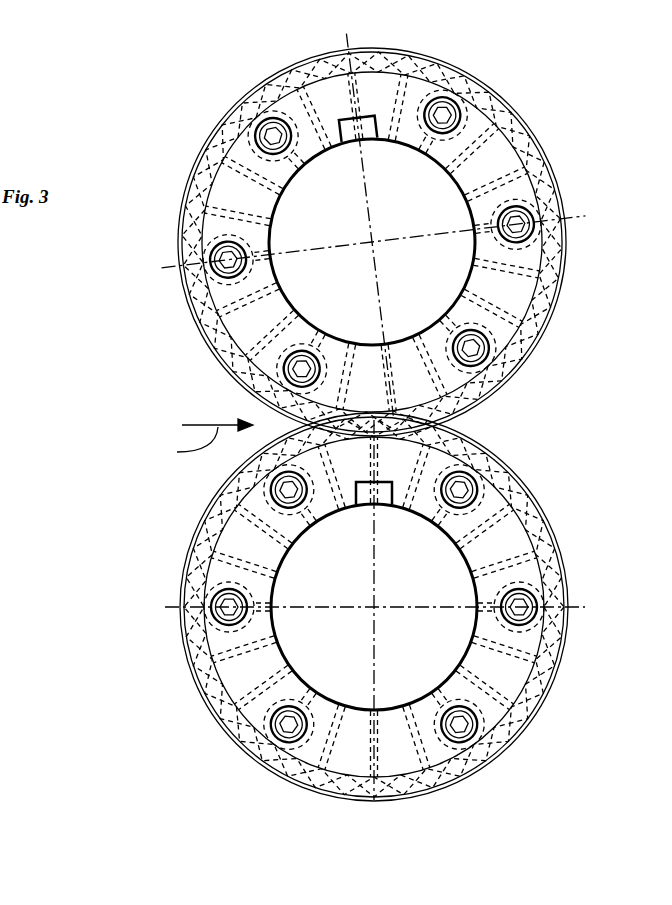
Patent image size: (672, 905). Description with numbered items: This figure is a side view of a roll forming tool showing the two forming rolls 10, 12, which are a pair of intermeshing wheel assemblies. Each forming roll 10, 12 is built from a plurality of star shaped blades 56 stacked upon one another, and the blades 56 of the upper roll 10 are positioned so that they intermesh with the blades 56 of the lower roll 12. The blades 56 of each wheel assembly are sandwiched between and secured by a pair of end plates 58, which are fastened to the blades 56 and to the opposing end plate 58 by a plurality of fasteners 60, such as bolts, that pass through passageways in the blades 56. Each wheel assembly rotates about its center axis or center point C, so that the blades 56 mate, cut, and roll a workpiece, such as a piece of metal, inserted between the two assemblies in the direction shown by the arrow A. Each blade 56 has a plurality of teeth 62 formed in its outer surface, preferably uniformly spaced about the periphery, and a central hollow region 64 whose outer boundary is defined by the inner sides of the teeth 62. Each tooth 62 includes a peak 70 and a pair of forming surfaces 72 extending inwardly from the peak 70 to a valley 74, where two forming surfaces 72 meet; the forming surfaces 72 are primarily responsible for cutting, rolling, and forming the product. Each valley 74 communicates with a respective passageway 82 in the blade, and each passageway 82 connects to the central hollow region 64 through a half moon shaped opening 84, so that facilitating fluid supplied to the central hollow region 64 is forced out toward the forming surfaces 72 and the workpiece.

The forming roll 10 is at (232, 80).
The forming roll 12 is at (237, 782).
The star shaped blade 56 is at (214, 373).
The end plate 58 is at (207, 139).
The fastener 60 is at (462, 107).
The tooth 62 is at (374, 44).
The central hollow region 64 is at (333, 177).
The peak 70 is at (513, 95).
The forming surface 72 is at (566, 255).
The valley 74 is at (448, 94).
The passageway 82 is at (318, 527).
The opening 84 is at (292, 548).
The center axis C is at (372, 242).
The arrow A is at (200, 443).